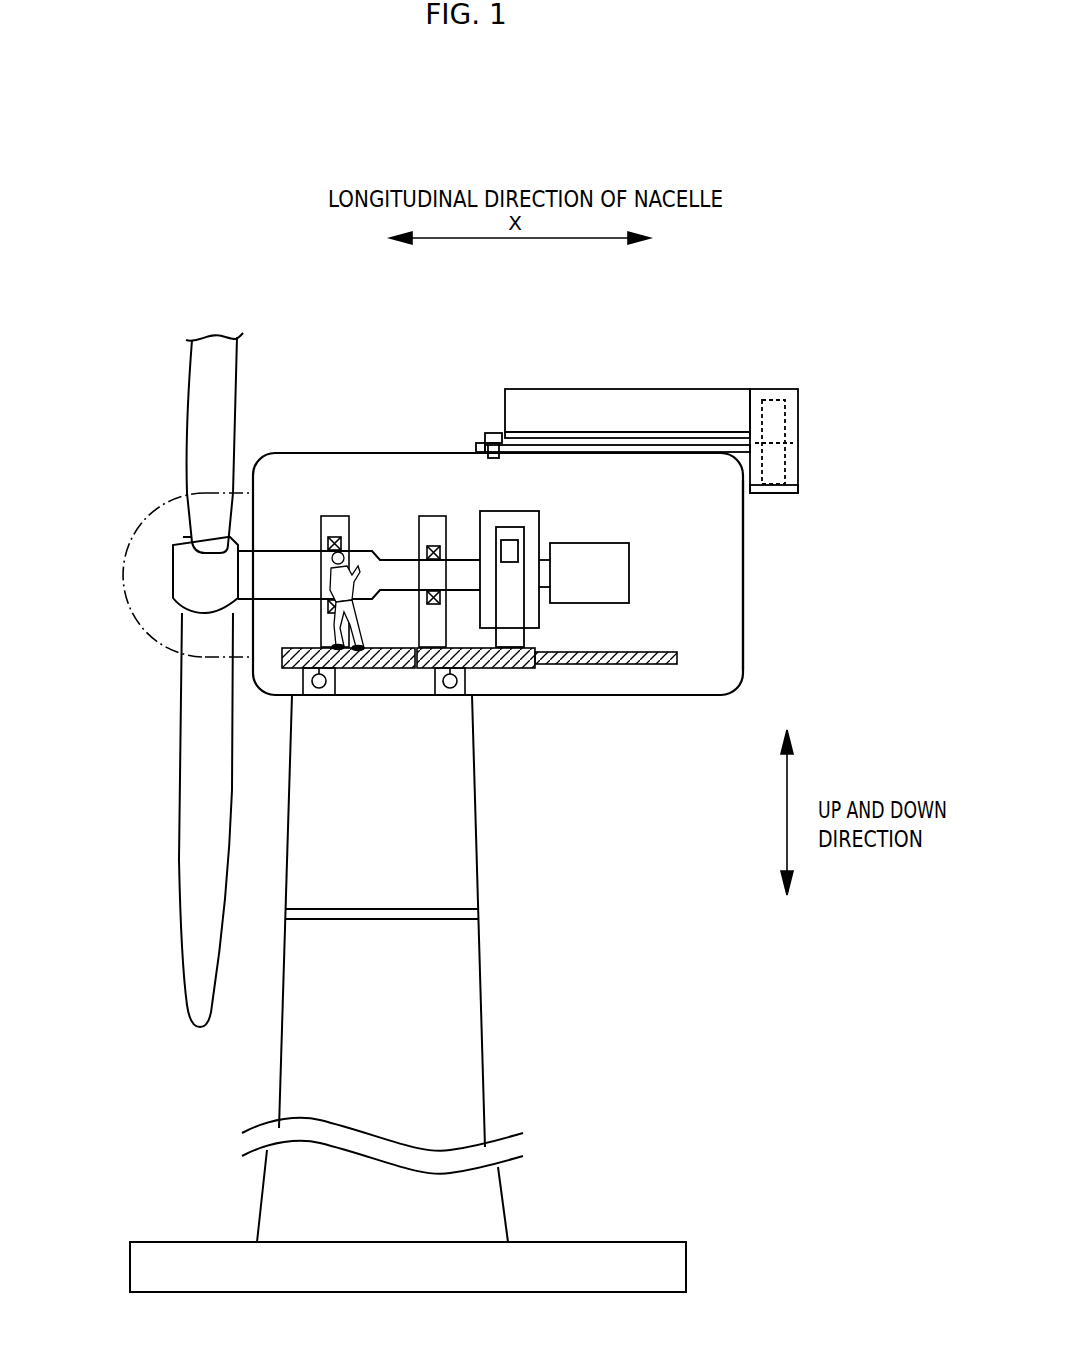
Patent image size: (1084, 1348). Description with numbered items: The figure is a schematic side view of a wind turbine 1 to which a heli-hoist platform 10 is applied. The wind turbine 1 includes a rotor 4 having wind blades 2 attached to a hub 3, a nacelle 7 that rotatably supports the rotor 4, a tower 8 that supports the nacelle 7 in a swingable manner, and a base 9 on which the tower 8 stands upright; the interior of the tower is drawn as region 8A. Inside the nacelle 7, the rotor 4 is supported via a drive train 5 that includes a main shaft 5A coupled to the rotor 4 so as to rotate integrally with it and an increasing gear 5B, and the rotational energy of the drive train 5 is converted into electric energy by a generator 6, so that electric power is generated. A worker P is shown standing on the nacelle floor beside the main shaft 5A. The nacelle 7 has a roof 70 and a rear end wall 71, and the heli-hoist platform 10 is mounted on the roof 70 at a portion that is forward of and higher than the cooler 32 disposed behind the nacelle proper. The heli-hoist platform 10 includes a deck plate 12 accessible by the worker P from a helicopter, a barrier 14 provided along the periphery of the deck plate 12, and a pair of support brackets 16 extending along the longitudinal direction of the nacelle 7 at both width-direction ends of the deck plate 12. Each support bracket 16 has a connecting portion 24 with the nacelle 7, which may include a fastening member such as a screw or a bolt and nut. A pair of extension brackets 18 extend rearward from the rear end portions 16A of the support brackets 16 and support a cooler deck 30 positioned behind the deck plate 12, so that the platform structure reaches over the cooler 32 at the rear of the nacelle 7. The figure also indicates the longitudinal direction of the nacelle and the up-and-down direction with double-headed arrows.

The wind turbine 1 is at (446, 128).
The wind blade 2 is at (187, 421).
The hub 3 is at (172, 583).
The rotor 4 is at (112, 518).
The drive train 5 is at (485, 492).
The main shaft 5A is at (286, 551).
The increasing gear 5B is at (477, 534).
The generator 6 is at (598, 547).
The nacelle 7 is at (386, 366).
The tower 8 is at (395, 968).
The tower interior 8A is at (428, 827).
The base 9 is at (588, 1242).
The heli-hoist platform 10 is at (676, 357).
The deck plate 12 is at (593, 438).
The barrier 14 is at (534, 389).
The support bracket 16 is at (652, 445).
The rear end portion 16A is at (756, 432).
The extension bracket 18 is at (793, 445).
The connecting portion 24 is at (491, 418).
The cooler deck 30 is at (795, 490).
The cooler 32 is at (790, 408).
The roof 70 is at (343, 453).
The rear end wall 71 is at (745, 648).
The worker P is at (357, 662).